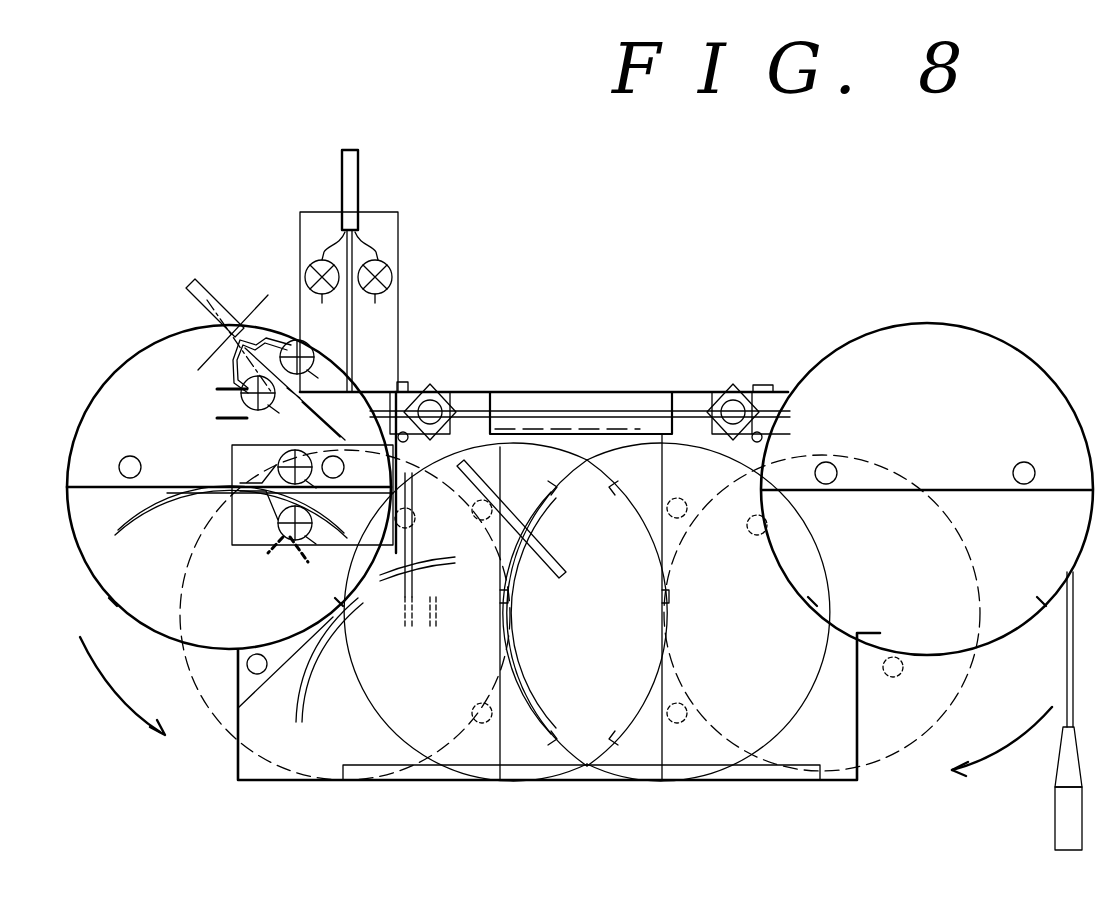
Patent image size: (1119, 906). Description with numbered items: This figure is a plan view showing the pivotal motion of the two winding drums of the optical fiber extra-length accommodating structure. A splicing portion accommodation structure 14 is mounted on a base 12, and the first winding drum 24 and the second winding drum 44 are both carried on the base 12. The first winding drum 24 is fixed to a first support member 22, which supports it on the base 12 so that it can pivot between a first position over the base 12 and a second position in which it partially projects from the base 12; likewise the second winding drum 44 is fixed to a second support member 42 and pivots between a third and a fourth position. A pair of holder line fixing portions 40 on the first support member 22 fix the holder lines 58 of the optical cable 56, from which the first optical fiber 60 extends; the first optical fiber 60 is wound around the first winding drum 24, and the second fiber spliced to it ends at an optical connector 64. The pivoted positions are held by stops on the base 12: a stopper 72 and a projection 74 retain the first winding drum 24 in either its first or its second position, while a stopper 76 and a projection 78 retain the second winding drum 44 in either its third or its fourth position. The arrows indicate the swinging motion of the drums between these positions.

The base 12 is at (587, 782).
The splicing portion accommodation structure 14 is at (607, 402).
The first support member 22 is at (385, 322).
The first winding drum 24 is at (142, 372).
The holder line fixing portions 40 is at (313, 262).
The second support member 42 is at (780, 392).
The second winding drum 44 is at (995, 365).
The optical cable 56 is at (350, 150).
The holder lines 58 is at (333, 240).
The first optical fiber 60 is at (340, 323).
The optical connector 64 is at (1062, 812).
The stopper 72 is at (405, 385).
The projection 74 is at (450, 405).
The stopper 76 is at (763, 388).
The projection 78 is at (738, 390).